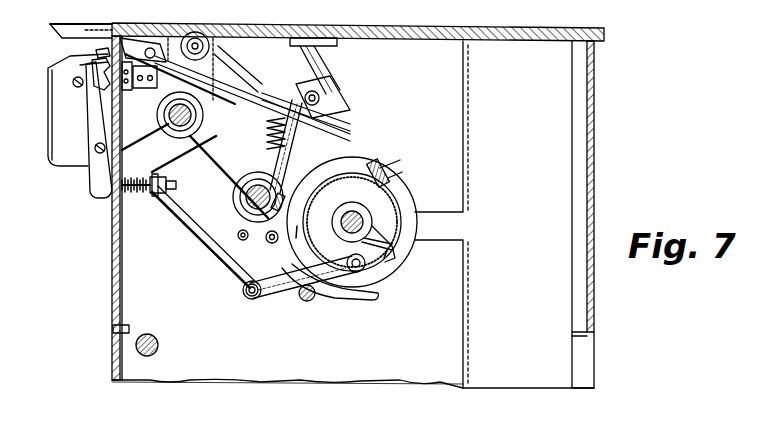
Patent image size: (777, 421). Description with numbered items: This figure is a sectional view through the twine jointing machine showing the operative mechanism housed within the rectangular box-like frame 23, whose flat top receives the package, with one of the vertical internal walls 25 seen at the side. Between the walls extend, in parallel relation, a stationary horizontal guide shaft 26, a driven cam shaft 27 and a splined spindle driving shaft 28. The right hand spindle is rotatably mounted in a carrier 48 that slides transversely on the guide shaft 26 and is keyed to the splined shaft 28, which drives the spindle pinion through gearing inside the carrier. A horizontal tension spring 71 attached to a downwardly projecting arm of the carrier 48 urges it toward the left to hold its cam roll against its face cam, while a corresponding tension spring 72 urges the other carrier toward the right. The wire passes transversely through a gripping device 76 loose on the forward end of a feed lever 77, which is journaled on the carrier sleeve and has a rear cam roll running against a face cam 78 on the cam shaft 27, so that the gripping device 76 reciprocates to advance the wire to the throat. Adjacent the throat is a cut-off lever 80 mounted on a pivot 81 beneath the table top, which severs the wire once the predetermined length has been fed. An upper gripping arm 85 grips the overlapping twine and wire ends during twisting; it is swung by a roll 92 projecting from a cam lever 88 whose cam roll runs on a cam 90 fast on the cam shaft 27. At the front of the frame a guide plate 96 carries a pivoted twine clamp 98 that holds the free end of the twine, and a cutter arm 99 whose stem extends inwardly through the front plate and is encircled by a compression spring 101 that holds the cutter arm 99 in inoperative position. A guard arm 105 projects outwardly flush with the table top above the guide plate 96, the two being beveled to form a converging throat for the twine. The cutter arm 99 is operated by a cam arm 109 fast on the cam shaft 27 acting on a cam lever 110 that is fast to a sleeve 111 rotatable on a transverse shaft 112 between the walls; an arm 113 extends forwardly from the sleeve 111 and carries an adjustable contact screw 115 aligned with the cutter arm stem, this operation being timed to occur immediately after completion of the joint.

The frame 23 is at (113, 296).
The internal wall 25 is at (434, 382).
The guide shaft 26 is at (240, 190).
The cam shaft 27 is at (342, 228).
The spindle driving shaft 28 is at (168, 115).
The carrier 48 is at (192, 180).
The tension spring 71 is at (270, 243).
The tension spring 72 is at (240, 231).
The gripping device 76 is at (138, 40).
The feed lever 77 is at (340, 132).
The face cam 78 is at (410, 196).
The cut-off lever 80 is at (230, 70).
The pivot 81 is at (200, 40).
The gripping arm 85 is at (314, 80).
The cam lever 88 is at (322, 118).
The cam 90 is at (368, 298).
The roll 92 is at (322, 100).
The guide plate 96 is at (72, 168).
The twine clamp 98 is at (90, 95).
The cutter arm 99 is at (88, 137).
The compression spring 101 is at (130, 194).
The guard arm 105 is at (62, 28).
The cam arm 109 is at (385, 270).
The cam lever 110 is at (306, 300).
The sleeve 111 is at (243, 293).
The transverse shaft 112 is at (262, 296).
The arm 113 is at (210, 250).
The contact screw 115 is at (152, 177).